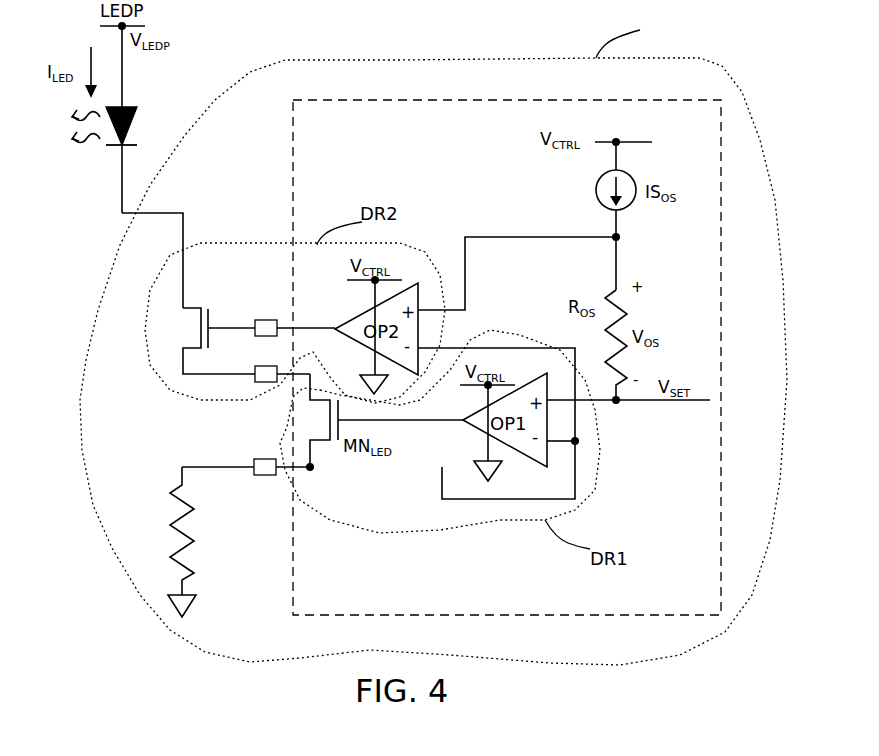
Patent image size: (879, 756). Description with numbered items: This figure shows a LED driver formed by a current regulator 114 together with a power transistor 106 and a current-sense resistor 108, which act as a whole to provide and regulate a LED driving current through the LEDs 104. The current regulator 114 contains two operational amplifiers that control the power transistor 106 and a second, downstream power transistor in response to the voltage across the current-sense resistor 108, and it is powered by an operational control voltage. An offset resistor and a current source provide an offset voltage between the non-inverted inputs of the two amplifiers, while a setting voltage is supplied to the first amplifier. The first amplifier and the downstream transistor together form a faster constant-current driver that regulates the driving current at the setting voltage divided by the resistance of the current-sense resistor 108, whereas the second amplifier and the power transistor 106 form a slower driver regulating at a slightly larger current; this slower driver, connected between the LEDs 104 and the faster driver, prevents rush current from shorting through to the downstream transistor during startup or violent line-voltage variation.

The LEDs 104 is at (123, 160).
The power transistor 106 is at (240, 345).
The current-sense resistor 108 is at (239, 538).
The current regulator 114 is at (690, 606).